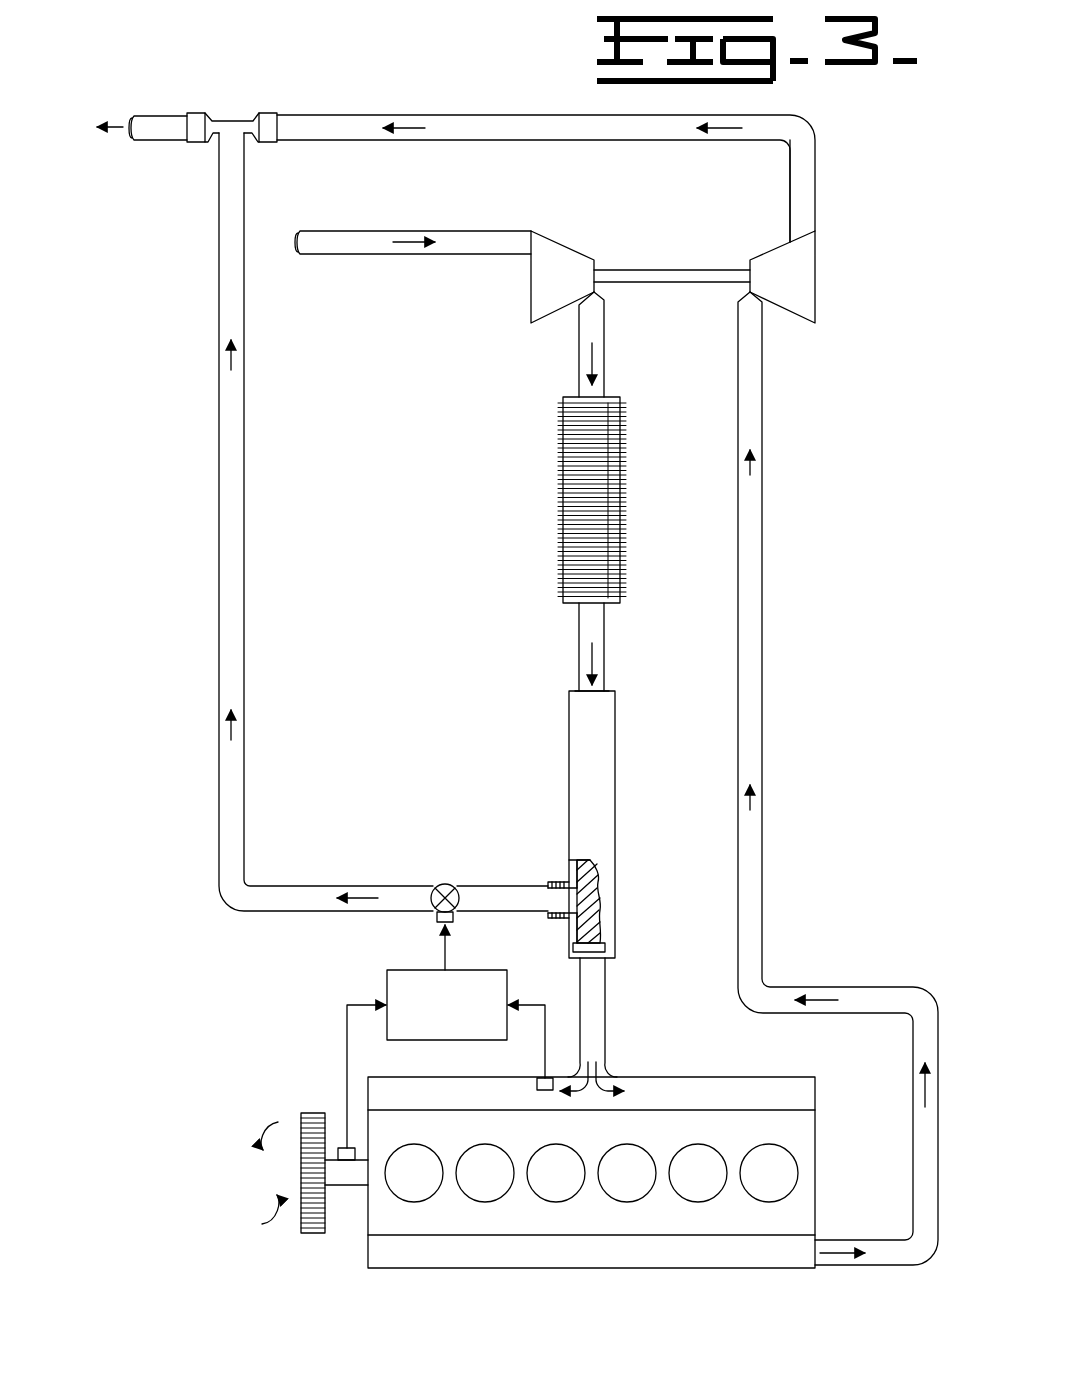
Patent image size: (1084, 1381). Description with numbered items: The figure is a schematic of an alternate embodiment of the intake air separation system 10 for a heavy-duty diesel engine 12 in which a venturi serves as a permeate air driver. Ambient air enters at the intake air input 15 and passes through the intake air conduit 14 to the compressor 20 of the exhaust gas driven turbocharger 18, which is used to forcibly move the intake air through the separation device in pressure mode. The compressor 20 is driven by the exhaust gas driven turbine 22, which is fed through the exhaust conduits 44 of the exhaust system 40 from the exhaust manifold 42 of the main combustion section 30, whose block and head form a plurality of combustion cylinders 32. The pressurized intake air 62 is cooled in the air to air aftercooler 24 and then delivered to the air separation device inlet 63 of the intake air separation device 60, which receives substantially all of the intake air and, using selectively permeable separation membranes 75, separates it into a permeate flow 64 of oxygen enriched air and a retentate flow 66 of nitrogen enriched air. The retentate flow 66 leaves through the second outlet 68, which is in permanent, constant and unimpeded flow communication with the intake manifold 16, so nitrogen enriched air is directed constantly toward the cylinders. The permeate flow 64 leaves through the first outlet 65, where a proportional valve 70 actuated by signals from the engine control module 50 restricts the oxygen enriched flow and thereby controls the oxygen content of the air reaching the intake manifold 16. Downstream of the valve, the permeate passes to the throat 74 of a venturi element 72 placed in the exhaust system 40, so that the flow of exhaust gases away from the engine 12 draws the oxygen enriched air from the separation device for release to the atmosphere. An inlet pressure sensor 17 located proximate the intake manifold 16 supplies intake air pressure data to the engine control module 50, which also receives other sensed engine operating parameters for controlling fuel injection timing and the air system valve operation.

The intake air separation system 10 is at (870, 178).
The heavy-duty diesel engine 12 is at (581, 1146).
The intake air conduit 14 is at (585, 491).
The intake air input 15 is at (487, 236).
The intake manifold 16 is at (772, 1088).
The inlet pressure sensor 17 is at (535, 1083).
The intake air pressurizing device 18 is at (673, 242).
The intake air compressor 20 is at (556, 251).
The exhaust gas driven turbine 22 is at (772, 253).
The air to air aftercooler 24 is at (562, 463).
The main combustion section 30 is at (581, 1151).
The combustion cylinders 32 is at (404, 1184).
The exhaust system 40 is at (838, 778).
The exhaust manifold 42 is at (758, 1265).
The exhaust conduits 44 is at (762, 400).
The engine control module 50 is at (434, 1017).
The intake air separation device 60 is at (597, 890).
The intake air 62 is at (591, 491).
The air separation device inlet 63 is at (598, 692).
The permeate flow 64 is at (221, 683).
The first outlet 65 is at (560, 893).
The retentate flow 66 is at (582, 1014).
The second outlet 68 is at (588, 952).
The proportional valve 70 is at (430, 905).
The venturi element 72 is at (272, 110).
The throat 74 is at (227, 122).
The selectively permeable separation membranes 75 is at (595, 825).